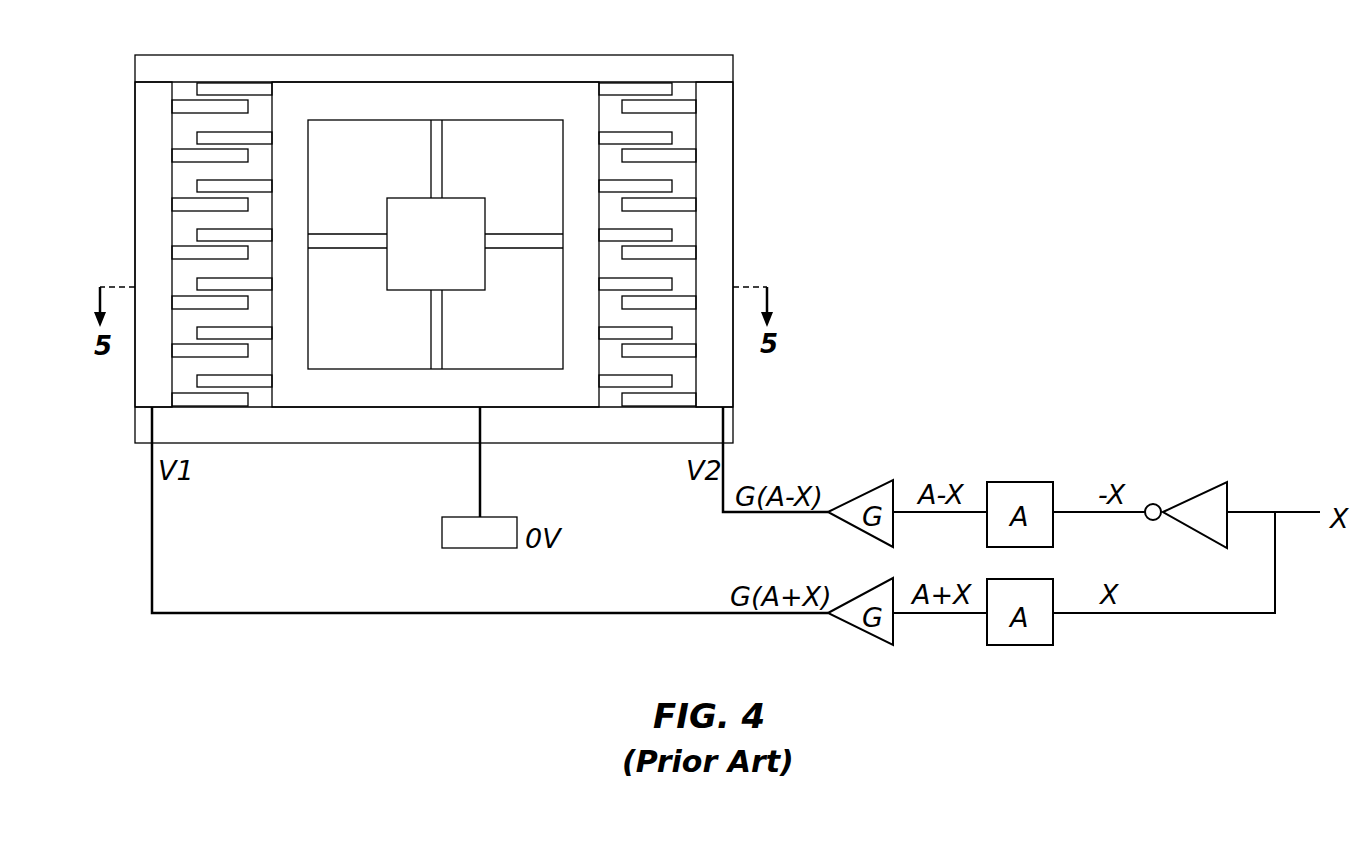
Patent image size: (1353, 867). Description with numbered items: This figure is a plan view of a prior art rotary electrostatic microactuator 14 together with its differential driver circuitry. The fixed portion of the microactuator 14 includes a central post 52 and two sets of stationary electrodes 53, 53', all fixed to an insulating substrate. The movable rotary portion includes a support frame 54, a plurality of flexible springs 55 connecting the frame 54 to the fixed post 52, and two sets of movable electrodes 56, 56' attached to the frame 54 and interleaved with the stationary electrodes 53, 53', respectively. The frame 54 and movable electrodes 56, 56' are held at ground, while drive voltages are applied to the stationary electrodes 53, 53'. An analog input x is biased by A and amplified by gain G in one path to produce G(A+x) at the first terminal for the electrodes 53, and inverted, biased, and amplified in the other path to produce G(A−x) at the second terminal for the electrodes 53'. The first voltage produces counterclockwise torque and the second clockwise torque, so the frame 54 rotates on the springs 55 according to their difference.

The rotary electrostatic microactuator 14 is at (463, 232).
The central post 52 is at (467, 210).
The stationary electrodes 53 is at (165, 244).
The stationary electrodes 53' is at (712, 244).
The support frame 54 is at (434, 214).
The flexible members or springs 55 is at (497, 243).
The movable electrodes 56 is at (278, 235).
The movable electrodes 56' is at (593, 235).